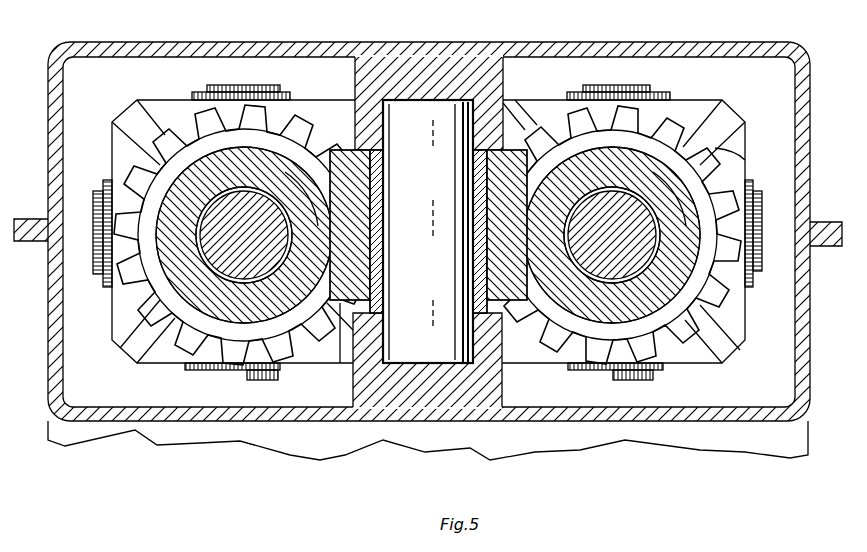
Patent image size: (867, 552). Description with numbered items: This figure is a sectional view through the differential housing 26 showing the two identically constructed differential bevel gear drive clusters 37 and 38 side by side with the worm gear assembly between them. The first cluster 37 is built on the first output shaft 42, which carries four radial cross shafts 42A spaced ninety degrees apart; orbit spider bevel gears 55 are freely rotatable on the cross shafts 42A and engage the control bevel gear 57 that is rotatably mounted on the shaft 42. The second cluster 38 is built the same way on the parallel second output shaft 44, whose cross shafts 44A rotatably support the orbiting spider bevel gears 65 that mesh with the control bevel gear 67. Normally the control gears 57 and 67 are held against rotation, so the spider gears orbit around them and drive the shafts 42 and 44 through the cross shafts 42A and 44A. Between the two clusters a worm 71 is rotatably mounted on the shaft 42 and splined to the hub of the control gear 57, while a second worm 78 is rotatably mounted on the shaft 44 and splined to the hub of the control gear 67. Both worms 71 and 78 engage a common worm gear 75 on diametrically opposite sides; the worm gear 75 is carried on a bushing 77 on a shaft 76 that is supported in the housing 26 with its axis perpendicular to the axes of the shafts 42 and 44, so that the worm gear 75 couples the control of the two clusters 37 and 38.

The differential housing 26 is at (373, 52).
The differential bevel gear drive cluster 37 is at (147, 100).
The differential bevel gear drive cluster 38 is at (741, 108).
The first output shaft 42 is at (257, 206).
The cross shafts 42A is at (222, 86).
The second output shaft 44 is at (622, 197).
The cross shafts 44A is at (585, 84).
The orbit spider bevel gears 55 is at (166, 106).
The control bevel gear 57 is at (288, 364).
The orbiting spider bevel gears 65 is at (687, 110).
The control bevel gear 67 is at (698, 166).
The worm 71 is at (191, 363).
The worm gear 75 is at (575, 96).
The shaft 76 is at (430, 127).
The bushing 77 is at (484, 286).
The second worm 78 is at (663, 327).